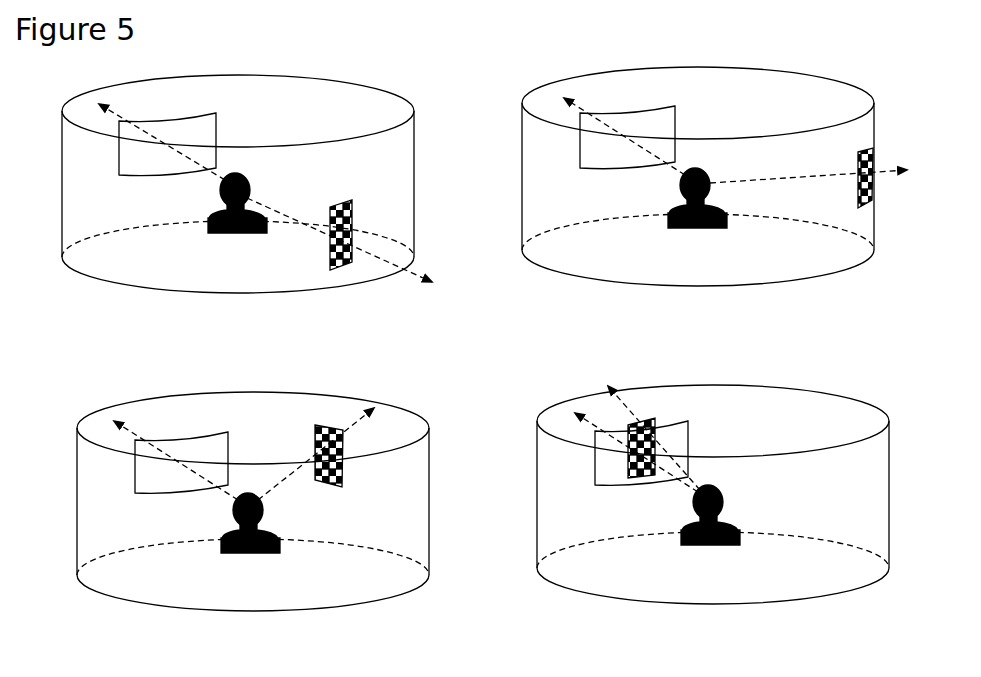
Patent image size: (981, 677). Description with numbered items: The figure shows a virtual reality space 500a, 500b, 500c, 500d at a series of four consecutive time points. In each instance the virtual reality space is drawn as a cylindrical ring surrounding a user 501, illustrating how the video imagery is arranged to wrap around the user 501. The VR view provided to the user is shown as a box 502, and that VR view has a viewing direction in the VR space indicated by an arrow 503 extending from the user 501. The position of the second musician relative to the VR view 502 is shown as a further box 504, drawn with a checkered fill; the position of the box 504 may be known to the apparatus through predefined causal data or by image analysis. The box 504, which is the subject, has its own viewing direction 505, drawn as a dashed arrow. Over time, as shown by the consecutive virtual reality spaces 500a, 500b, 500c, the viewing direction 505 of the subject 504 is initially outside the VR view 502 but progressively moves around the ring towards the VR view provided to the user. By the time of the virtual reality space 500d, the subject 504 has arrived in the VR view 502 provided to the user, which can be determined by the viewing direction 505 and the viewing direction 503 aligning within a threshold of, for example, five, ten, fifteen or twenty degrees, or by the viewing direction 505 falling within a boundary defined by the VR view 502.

The virtual reality space 500a is at (408, 150).
The virtual reality space 500b is at (868, 143).
The virtual reality space 500c is at (422, 467).
The virtual reality space 500d is at (882, 458).
The user 501 is at (227, 235).
The VR view 502 is at (175, 117).
The viewing direction 503 is at (104, 102).
The box 504 is at (348, 262).
The viewing direction 505 is at (418, 278).